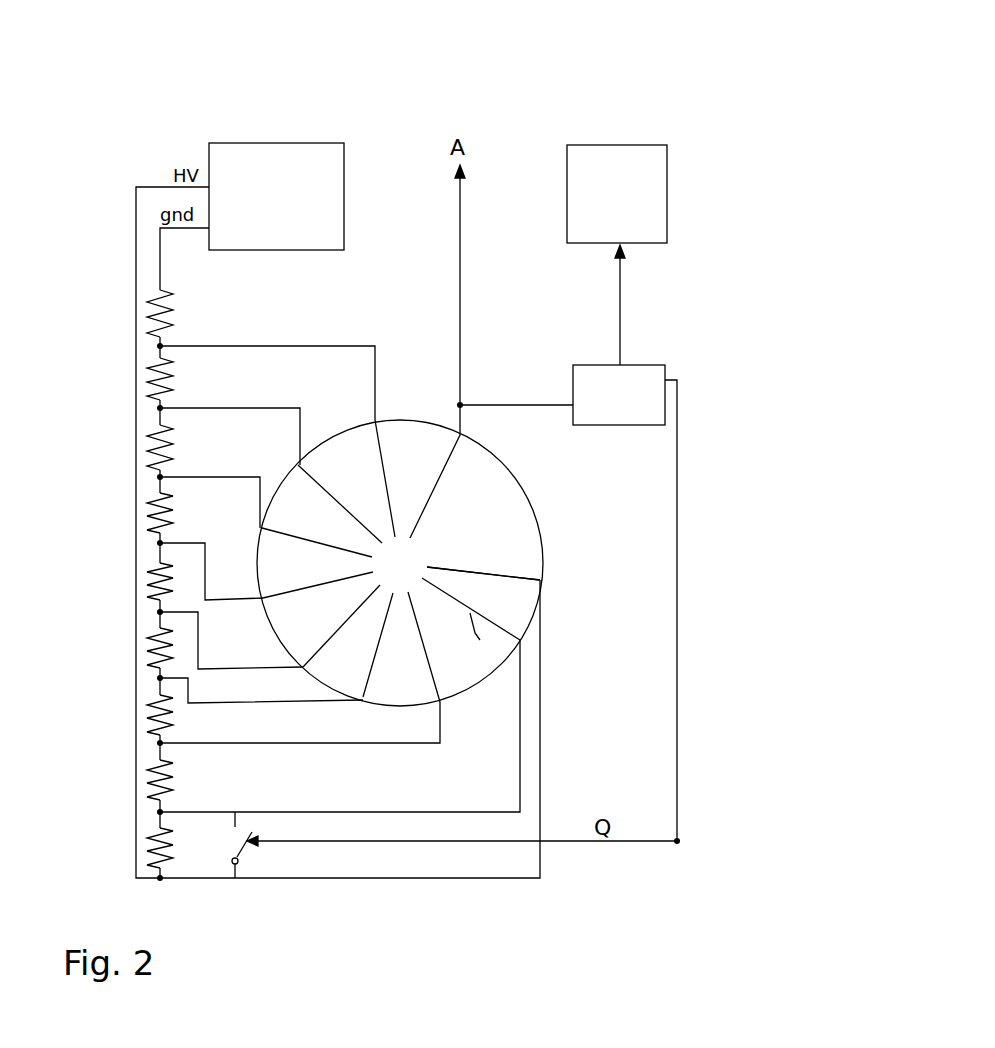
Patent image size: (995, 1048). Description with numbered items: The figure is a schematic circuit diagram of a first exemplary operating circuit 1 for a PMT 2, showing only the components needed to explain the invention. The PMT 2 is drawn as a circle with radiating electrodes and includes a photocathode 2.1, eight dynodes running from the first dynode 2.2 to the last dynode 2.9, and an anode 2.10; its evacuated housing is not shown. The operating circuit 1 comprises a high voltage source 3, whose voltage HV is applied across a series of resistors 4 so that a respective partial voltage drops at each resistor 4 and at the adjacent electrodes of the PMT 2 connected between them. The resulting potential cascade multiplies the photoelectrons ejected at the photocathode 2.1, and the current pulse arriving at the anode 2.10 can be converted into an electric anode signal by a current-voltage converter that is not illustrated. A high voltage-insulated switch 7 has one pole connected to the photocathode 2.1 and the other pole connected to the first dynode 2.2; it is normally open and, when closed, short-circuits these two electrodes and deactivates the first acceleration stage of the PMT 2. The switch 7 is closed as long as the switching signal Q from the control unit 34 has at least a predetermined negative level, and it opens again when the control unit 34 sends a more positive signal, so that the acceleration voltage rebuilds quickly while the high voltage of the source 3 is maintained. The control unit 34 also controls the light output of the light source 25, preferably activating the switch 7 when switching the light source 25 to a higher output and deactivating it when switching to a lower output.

The operating circuit 1 is at (618, 88).
The PMT 2 is at (455, 384).
The photocathode 2.1 is at (507, 573).
The first dynode 2.2 is at (480, 640).
The dynode 2.9 is at (298, 463).
The anode 2.10 is at (447, 470).
The high voltage source 3 is at (256, 170).
The resistor 4 is at (152, 310).
The high voltage-insulated switch 7 is at (242, 850).
The light source 25 is at (667, 190).
The control unit 34 is at (650, 367).